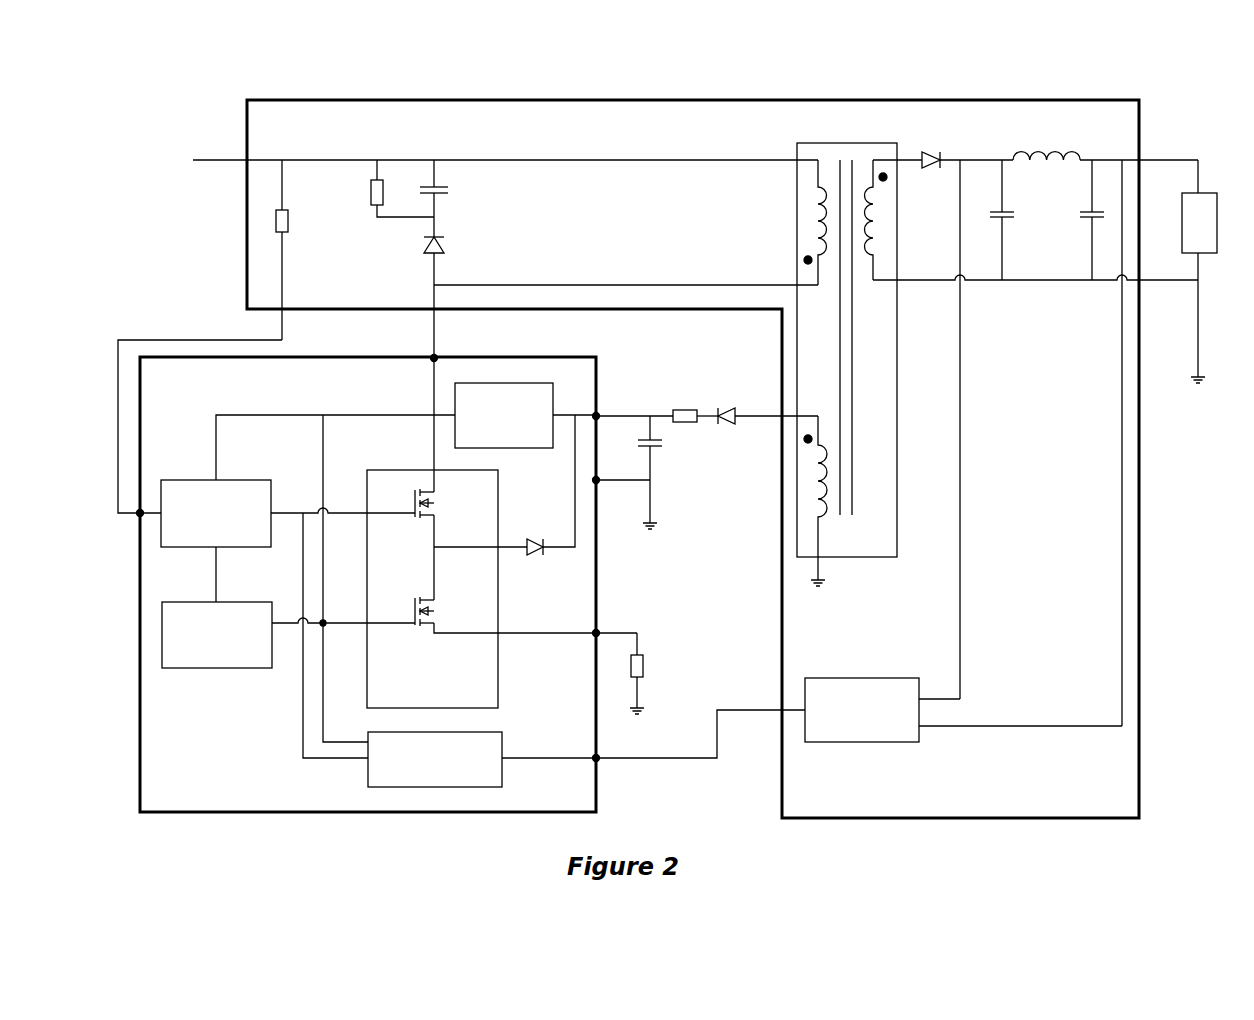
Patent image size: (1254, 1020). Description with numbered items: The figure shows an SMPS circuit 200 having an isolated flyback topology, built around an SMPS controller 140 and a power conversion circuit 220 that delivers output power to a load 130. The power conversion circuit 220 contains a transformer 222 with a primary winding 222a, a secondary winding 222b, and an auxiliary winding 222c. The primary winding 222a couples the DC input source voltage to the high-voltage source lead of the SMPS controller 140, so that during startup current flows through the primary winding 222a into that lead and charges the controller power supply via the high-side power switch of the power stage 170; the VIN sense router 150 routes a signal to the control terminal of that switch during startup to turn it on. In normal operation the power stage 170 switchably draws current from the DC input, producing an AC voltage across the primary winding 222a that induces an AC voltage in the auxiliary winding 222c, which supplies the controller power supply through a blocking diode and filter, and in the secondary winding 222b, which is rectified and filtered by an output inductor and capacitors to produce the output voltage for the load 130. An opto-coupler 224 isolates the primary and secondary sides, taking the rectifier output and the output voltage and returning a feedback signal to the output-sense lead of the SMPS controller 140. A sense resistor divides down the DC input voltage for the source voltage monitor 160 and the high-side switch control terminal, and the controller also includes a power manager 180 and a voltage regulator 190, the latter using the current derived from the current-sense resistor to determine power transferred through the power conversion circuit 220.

The SMPS circuit 200 is at (119, 251).
The power conversion circuit 220 is at (727, 449).
The transformer 222 is at (847, 355).
The primary winding 222a is at (813, 232).
The secondary winding 222b is at (873, 232).
The auxiliary winding 222c is at (831, 501).
The opto-coupler 224 is at (859, 707).
The load 130 is at (1207, 271).
The SMPS controller 140 is at (402, 575).
The VIN sense router 150 is at (216, 502).
The source voltage monitor 160 is at (217, 623).
The power stage 170 is at (481, 533).
The power manager 180 is at (504, 407).
The voltage regulator 190 is at (482, 749).